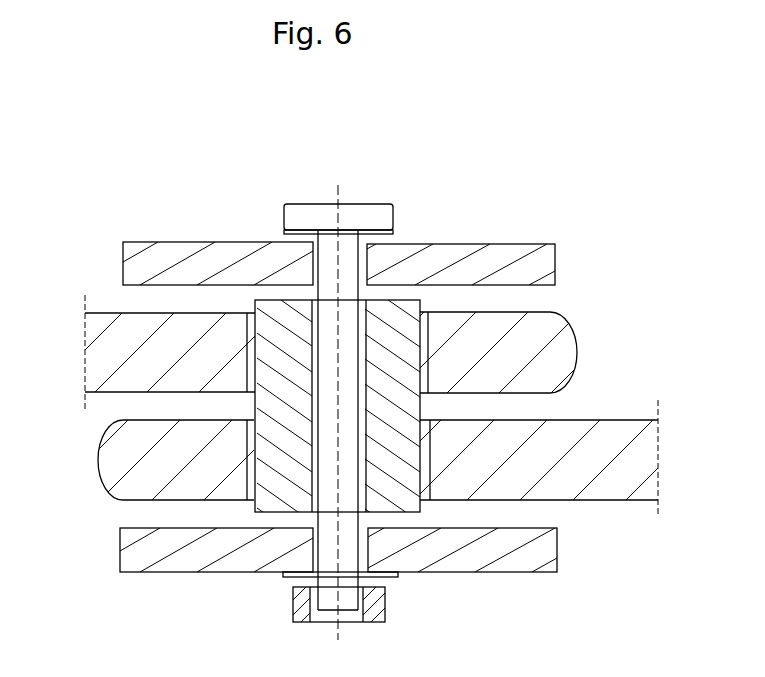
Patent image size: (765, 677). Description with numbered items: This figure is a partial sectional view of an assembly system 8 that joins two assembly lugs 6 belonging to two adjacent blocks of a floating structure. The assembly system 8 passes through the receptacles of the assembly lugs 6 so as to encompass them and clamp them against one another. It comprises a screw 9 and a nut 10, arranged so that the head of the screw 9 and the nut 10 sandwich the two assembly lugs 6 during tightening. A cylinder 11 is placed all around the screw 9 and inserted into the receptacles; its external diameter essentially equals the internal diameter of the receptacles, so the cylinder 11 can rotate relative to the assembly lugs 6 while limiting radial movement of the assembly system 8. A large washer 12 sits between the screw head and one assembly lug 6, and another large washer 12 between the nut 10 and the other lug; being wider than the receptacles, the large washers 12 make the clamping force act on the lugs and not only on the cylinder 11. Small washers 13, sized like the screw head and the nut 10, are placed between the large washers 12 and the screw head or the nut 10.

The assembly lug 6 is at (542, 353).
The assembly system 8 is at (402, 185).
The screw 9 is at (332, 243).
The nut 10 is at (298, 597).
The cylinder 11 is at (400, 458).
The large washer 12 is at (147, 267).
The small washer 13 is at (396, 233).